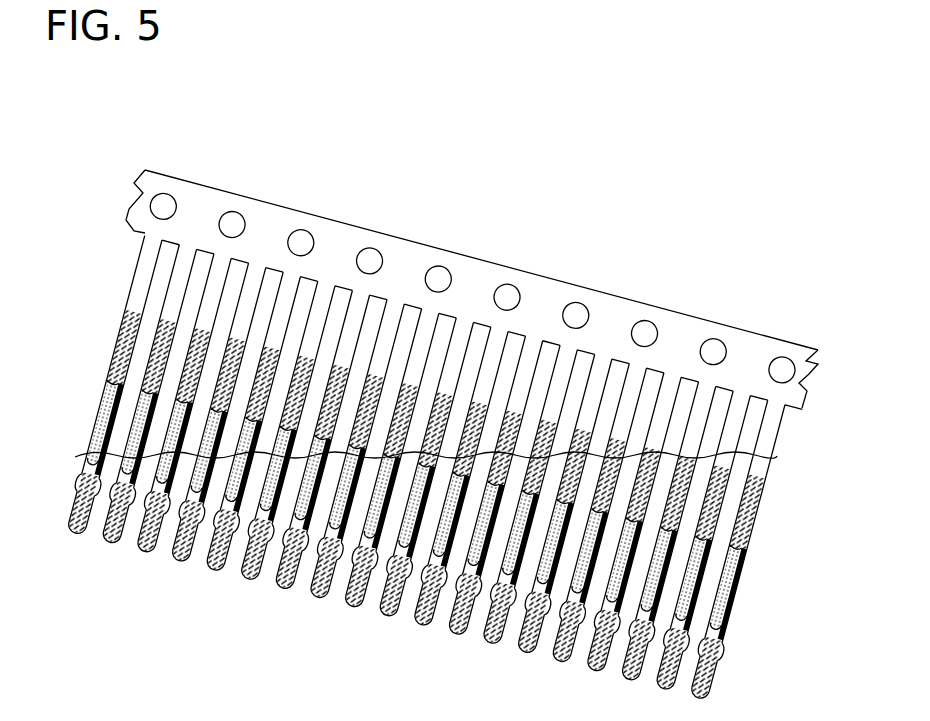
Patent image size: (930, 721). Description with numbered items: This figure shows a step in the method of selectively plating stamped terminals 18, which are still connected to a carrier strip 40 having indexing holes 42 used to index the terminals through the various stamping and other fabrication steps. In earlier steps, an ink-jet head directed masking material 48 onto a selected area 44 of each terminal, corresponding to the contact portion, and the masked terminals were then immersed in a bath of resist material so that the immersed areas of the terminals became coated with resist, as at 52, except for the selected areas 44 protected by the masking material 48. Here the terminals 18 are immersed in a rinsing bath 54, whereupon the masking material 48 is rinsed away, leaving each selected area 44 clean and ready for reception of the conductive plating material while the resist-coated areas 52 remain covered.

The carrier strip 40 is at (197, 217).
The indexing holes 42 is at (368, 268).
The terminals 18 is at (518, 656).
The masking material 48 is at (142, 412).
The selected area 44 is at (700, 558).
The resist-coated area 52 is at (719, 648).
The rinsing bath 54 is at (673, 447).